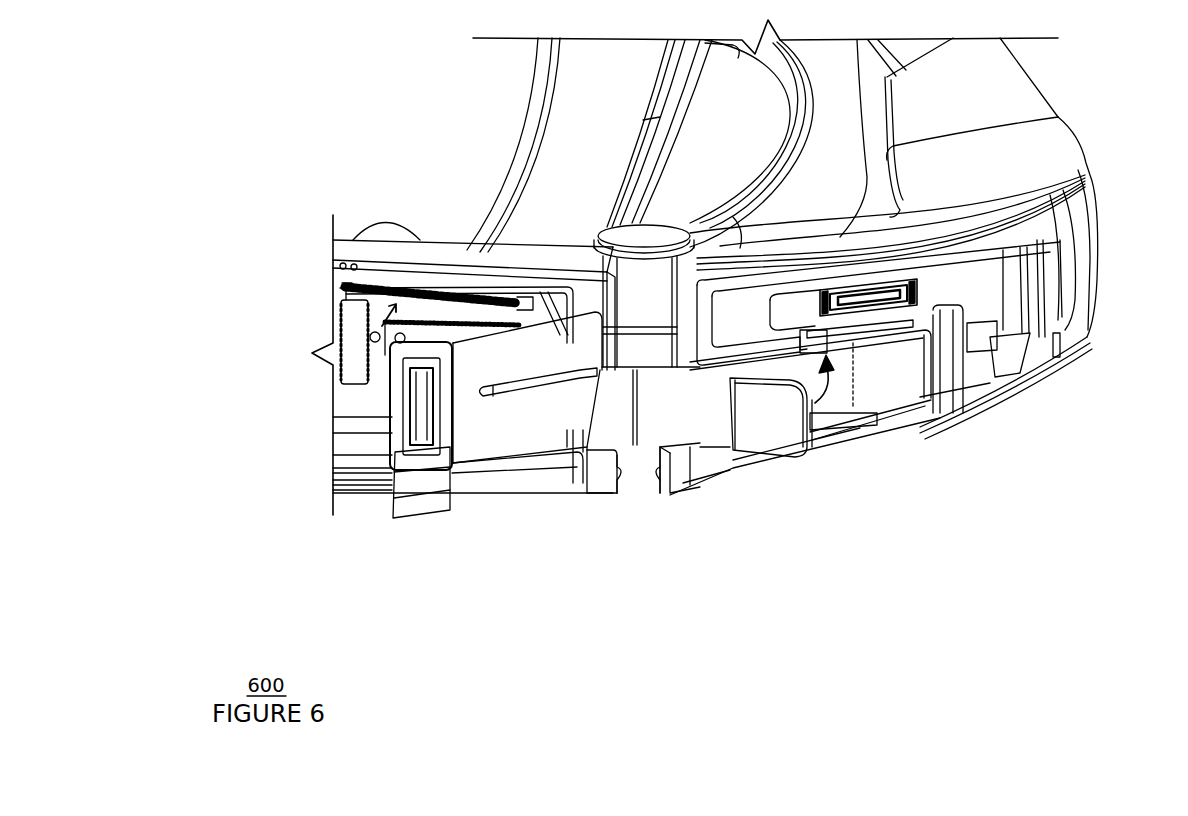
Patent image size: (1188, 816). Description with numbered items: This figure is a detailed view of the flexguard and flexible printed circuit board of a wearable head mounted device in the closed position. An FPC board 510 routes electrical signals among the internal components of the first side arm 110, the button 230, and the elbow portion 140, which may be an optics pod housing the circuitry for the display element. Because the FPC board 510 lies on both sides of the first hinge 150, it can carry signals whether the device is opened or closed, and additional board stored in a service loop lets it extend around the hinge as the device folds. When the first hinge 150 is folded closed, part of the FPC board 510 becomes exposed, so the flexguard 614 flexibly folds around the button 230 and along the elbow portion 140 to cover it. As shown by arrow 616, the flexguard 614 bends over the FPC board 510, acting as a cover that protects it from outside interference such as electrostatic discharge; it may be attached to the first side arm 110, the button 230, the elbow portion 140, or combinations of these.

The first side arm 110 is at (355, 478).
The elbow portion 140 is at (1092, 167).
The first hinge 150 is at (637, 478).
The button 230 is at (610, 233).
The FPC board 510 is at (493, 447).
The flexguard 614 is at (768, 428).
The arrow 616 is at (830, 393).